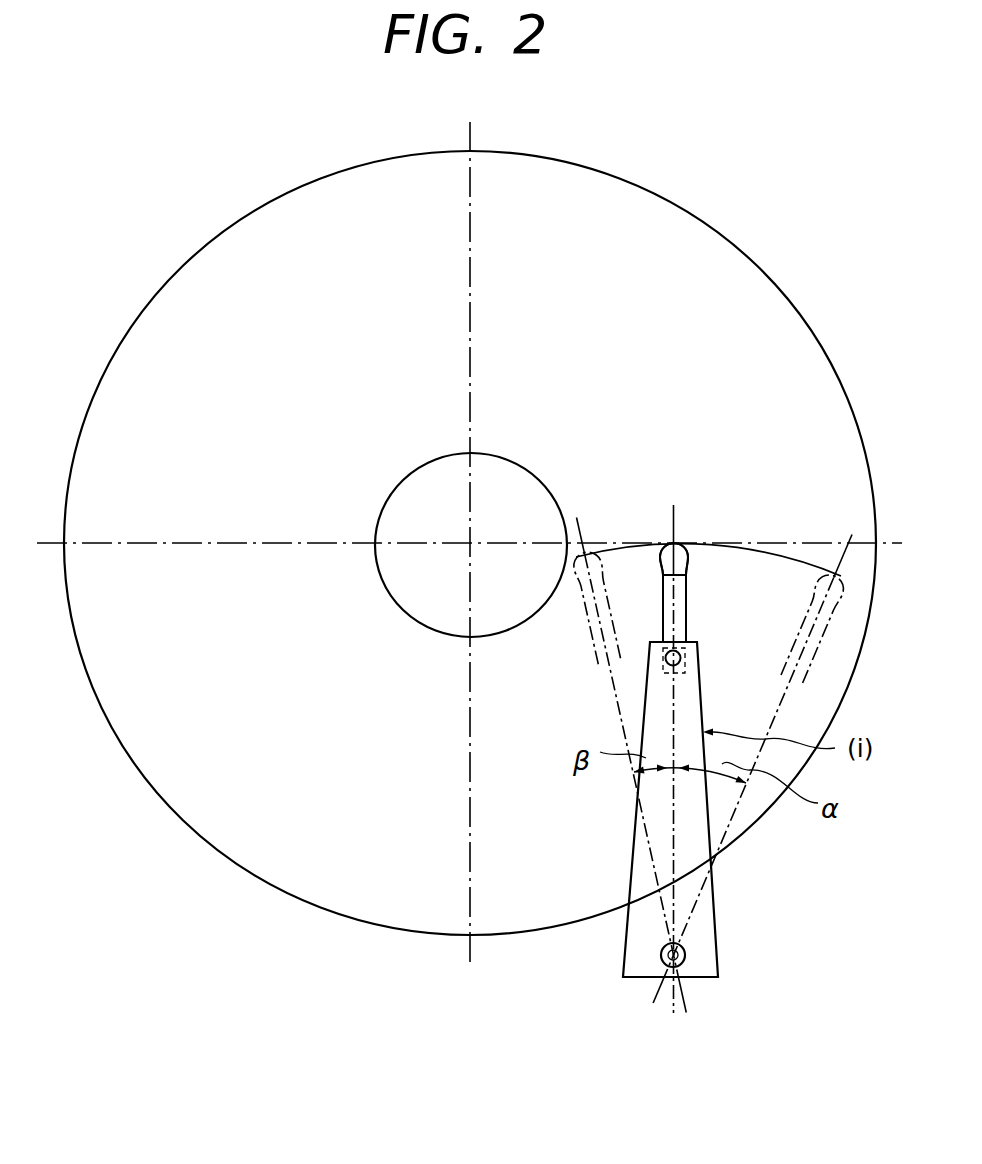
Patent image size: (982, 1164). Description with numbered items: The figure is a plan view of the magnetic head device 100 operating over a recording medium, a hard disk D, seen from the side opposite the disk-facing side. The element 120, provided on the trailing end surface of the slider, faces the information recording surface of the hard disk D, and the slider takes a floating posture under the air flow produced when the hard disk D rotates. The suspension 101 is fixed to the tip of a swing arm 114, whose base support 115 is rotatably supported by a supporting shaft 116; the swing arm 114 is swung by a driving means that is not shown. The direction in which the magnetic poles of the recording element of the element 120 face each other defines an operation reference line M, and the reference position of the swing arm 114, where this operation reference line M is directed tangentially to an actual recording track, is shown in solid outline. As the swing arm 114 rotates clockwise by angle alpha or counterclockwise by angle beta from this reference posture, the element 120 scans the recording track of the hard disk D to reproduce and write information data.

The hard disk D is at (718, 257).
The operation reference line M is at (675, 543).
The magnetic head device 100 is at (658, 608).
The element 120 is at (678, 543).
The suspension 101 is at (686, 588).
The swing arm 114 is at (697, 873).
The base support 115 is at (685, 949).
The supporting shaft 116 is at (662, 957).